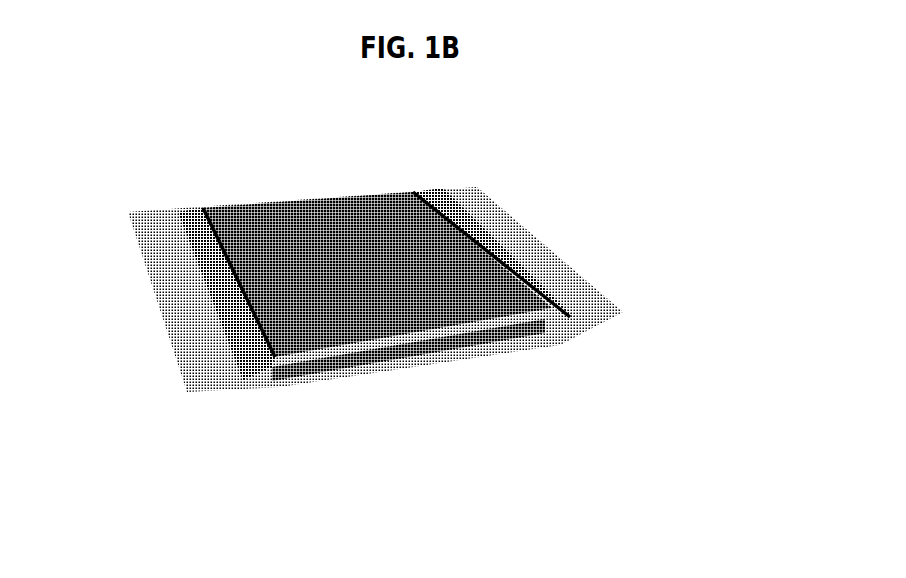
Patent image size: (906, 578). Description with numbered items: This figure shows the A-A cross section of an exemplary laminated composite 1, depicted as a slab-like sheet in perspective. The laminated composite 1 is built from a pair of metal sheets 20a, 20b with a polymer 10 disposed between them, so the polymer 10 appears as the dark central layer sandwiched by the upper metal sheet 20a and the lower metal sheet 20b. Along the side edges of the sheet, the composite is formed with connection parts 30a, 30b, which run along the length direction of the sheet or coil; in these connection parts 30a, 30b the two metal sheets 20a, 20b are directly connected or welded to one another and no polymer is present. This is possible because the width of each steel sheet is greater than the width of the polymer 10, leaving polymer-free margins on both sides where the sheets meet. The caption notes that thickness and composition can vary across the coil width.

The laminated composite 1 is at (123, 123).
The polymer 10 is at (520, 333).
The metal sheet 20a is at (470, 280).
The metal sheet 20b is at (292, 387).
The connection part 30a is at (573, 293).
The connection part 30b is at (213, 363).